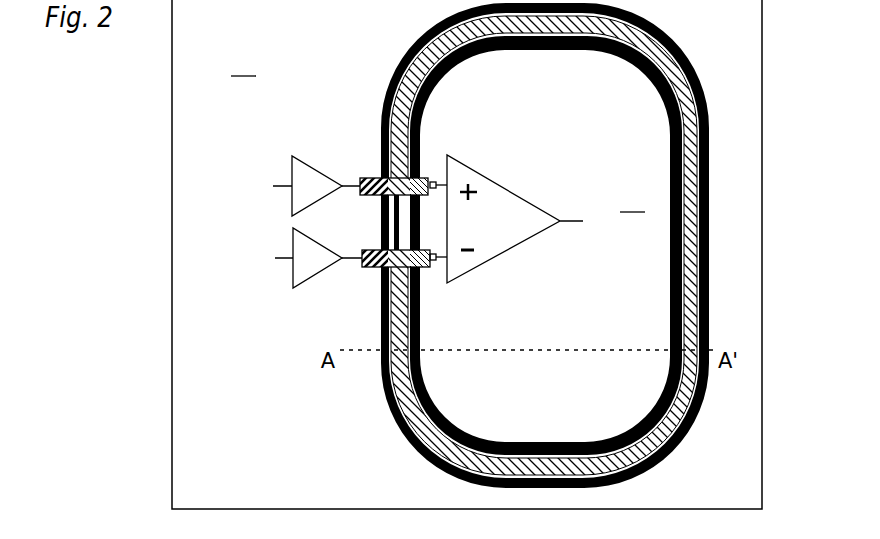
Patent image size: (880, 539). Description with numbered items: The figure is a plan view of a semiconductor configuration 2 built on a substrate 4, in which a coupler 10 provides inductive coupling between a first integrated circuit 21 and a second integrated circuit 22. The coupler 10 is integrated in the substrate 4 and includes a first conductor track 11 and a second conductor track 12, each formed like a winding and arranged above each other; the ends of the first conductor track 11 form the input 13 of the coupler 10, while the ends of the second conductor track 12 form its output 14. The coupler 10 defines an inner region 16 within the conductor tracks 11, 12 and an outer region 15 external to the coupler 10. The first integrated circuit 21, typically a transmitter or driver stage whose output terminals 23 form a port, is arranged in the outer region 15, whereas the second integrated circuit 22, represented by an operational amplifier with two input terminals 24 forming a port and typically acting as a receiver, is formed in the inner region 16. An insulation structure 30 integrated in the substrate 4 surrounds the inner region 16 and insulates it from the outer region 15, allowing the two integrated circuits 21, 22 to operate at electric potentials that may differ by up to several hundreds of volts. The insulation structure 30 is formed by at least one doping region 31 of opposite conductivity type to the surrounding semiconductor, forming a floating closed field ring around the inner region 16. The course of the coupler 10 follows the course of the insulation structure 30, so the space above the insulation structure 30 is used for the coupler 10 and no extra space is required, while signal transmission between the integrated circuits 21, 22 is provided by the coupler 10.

The semiconductor configuration 2 is at (499, 254).
The substrate 4 is at (743, 235).
The coupler 10 is at (547, 244).
The first conductor track 11 is at (375, 268).
The second conductor track 12 is at (665, 53).
The input 13 is at (363, 177).
The output 14 is at (423, 177).
The outer region 15 is at (243, 65).
The inner region 16 is at (632, 201).
The first integrated circuit 21 is at (305, 162).
The second integrated circuit 22 is at (510, 190).
The output terminals 23 is at (342, 183).
The input terminals 24 is at (436, 181).
The insulation structure 30 is at (404, 48).
The doping region 31 is at (380, 230).